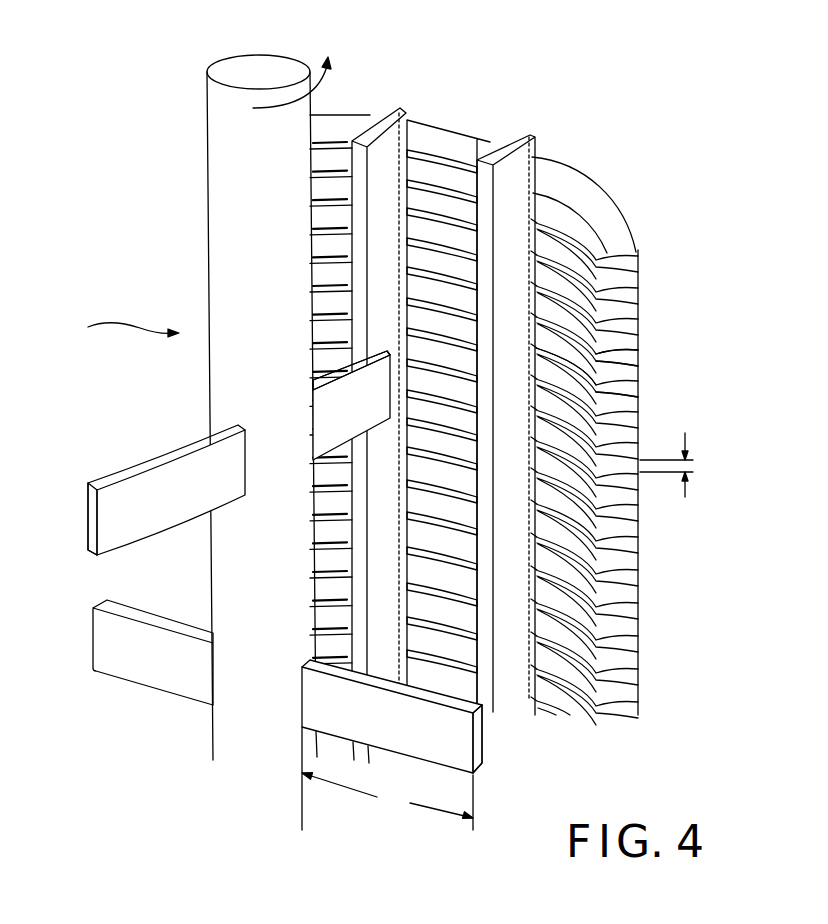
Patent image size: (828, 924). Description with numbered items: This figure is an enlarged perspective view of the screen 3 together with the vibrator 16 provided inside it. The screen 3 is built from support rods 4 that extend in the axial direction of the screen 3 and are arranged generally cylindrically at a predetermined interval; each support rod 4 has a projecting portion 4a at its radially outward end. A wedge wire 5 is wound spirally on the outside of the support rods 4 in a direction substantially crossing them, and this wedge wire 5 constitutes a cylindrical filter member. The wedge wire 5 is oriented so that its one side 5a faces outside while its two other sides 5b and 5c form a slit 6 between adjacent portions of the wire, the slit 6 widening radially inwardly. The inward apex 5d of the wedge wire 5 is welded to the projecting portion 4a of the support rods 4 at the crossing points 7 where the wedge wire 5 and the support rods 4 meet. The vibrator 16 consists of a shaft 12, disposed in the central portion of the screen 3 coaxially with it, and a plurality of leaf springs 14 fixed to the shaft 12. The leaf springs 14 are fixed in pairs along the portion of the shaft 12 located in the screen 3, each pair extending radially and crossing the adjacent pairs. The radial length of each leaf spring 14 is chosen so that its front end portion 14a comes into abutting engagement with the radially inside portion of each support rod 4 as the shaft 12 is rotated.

The screen 3 is at (633, 406).
The support rods 4 is at (512, 193).
The projecting portion 4a is at (385, 178).
The wedge wire 5 is at (623, 258).
The one side of the wedge wire 5a is at (637, 360).
The other side of the wedge wire 5b is at (628, 340).
The other side of the wedge wire 5c is at (628, 372).
The inward apex 5d is at (612, 350).
The slit 6 is at (676, 465).
The crossing points 7 is at (532, 193).
The shaft 12 is at (227, 270).
The leaf springs 14 is at (168, 483).
The front end portion 14a is at (380, 390).
The vibrator 16 is at (115, 331).